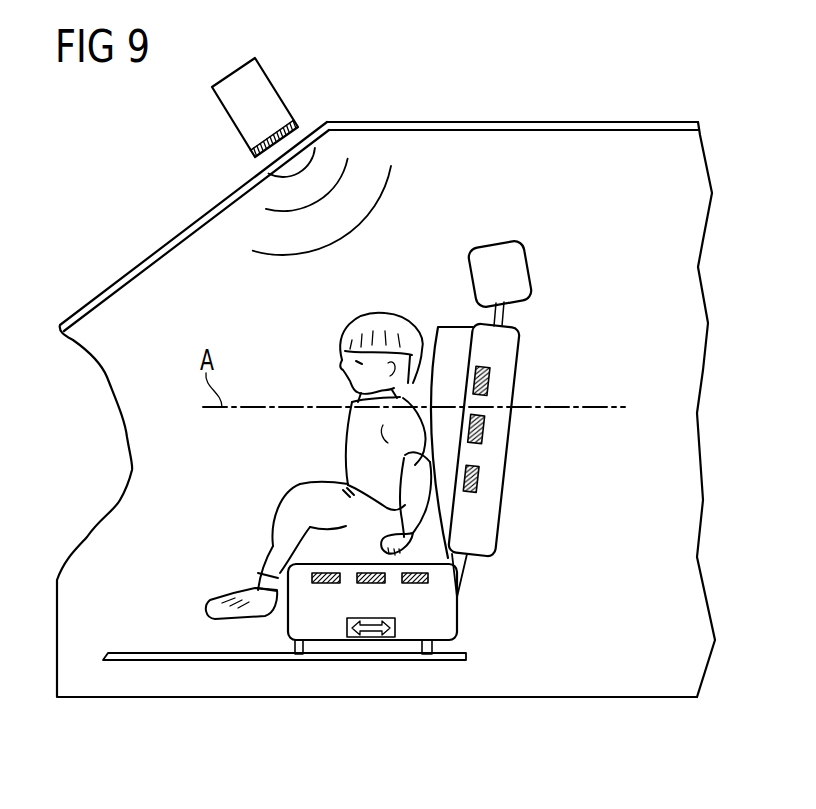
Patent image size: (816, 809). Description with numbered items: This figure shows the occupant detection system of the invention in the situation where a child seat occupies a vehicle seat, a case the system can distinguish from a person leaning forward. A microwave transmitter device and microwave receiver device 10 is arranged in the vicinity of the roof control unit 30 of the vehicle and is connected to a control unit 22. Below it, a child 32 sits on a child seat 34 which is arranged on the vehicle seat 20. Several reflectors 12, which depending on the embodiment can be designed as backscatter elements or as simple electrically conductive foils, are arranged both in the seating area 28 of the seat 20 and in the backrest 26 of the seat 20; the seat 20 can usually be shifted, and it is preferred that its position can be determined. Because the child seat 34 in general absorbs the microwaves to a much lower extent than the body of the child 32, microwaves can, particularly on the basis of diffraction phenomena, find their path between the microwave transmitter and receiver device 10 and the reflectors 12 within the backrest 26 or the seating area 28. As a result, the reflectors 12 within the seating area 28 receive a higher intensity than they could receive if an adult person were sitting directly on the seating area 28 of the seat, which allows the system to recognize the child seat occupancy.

The microwave transmitter device and microwave receiver device 10 is at (295, 117).
The reflectors 12 is at (489, 383).
The vehicle seat 20 is at (340, 450).
The control unit 22 is at (267, 88).
The backrest 26 is at (510, 345).
The seating area 28 is at (501, 557).
The roof control unit 30 is at (460, 121).
The child 32 is at (350, 452).
The child seat 34 is at (458, 337).